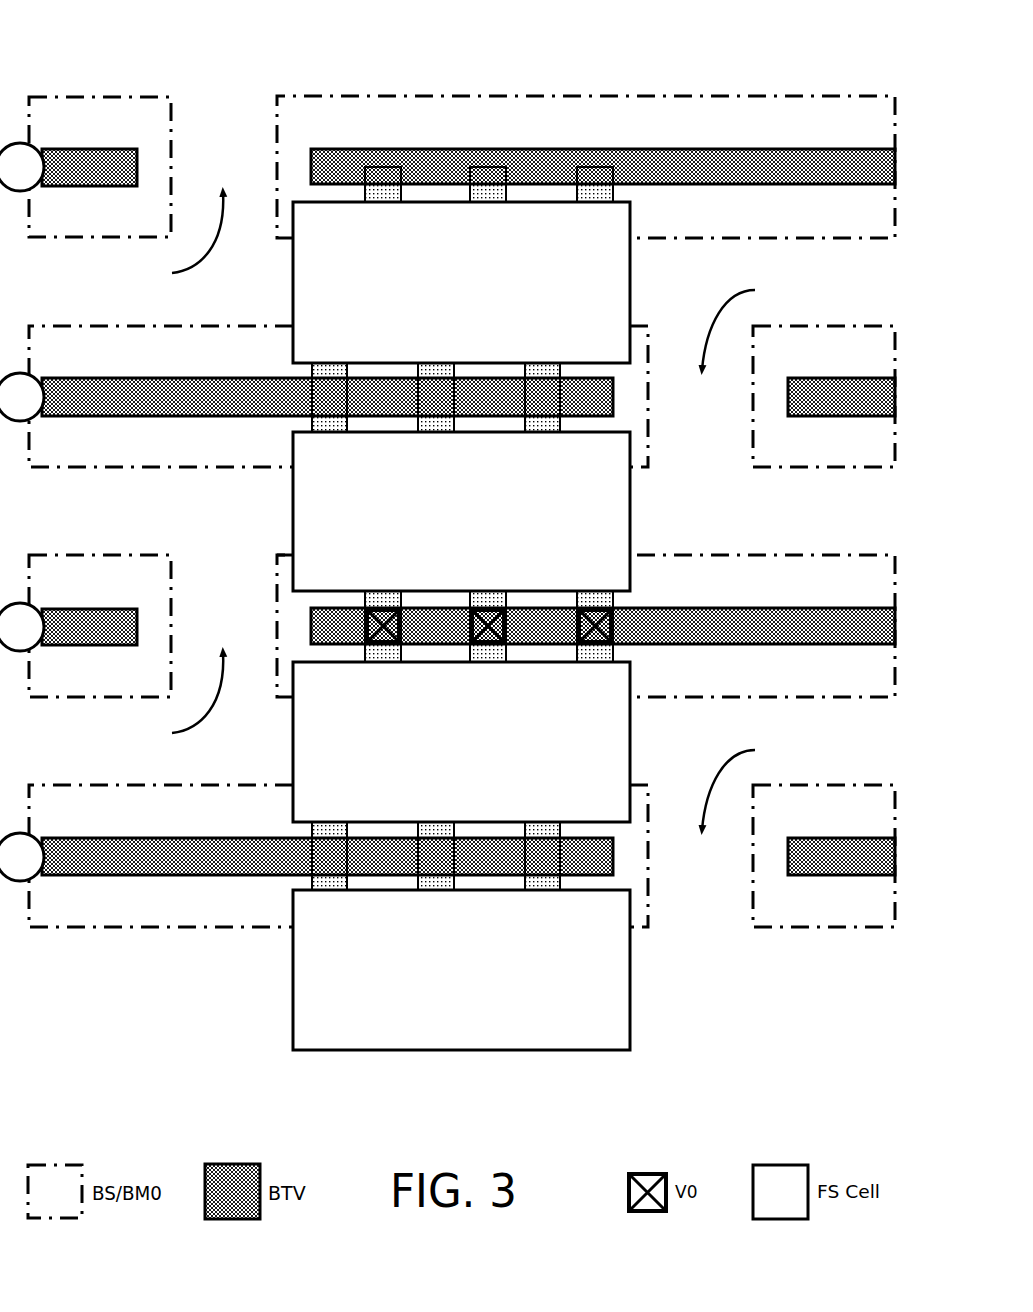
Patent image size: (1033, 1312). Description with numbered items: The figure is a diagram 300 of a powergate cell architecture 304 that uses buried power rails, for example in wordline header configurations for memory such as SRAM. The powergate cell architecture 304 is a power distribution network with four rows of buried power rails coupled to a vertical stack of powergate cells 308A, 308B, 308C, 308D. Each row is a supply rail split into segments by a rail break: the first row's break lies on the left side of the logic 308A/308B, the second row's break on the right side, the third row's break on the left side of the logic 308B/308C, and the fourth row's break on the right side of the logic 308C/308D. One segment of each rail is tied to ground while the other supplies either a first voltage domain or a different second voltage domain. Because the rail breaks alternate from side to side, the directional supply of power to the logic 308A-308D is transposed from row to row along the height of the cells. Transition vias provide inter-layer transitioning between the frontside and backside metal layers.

The diagram 300 is at (455, 525).
The powergate cell architecture 304 is at (455, 538).
The powergate cell 308A is at (461, 282).
The powergate cell 308B is at (461, 511).
The powergate cell 308C is at (461, 742).
The powergate cell 308D is at (461, 970).